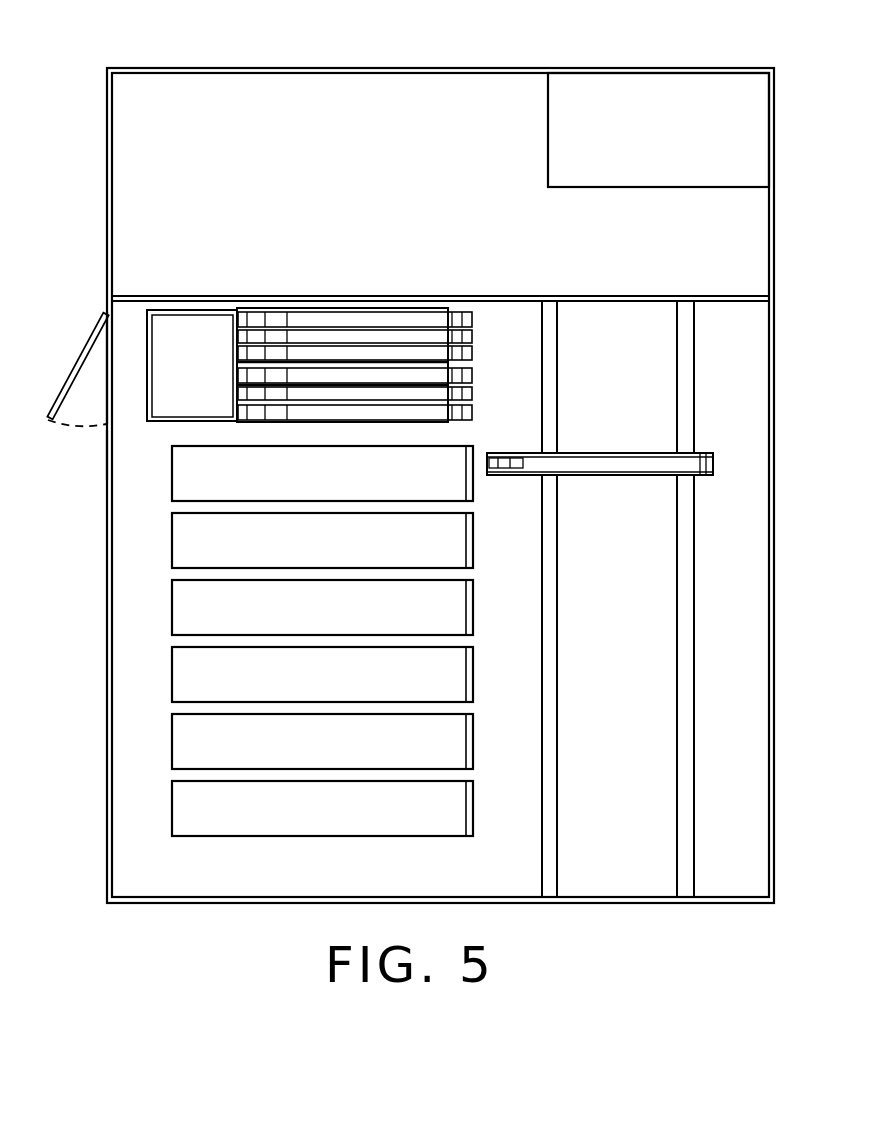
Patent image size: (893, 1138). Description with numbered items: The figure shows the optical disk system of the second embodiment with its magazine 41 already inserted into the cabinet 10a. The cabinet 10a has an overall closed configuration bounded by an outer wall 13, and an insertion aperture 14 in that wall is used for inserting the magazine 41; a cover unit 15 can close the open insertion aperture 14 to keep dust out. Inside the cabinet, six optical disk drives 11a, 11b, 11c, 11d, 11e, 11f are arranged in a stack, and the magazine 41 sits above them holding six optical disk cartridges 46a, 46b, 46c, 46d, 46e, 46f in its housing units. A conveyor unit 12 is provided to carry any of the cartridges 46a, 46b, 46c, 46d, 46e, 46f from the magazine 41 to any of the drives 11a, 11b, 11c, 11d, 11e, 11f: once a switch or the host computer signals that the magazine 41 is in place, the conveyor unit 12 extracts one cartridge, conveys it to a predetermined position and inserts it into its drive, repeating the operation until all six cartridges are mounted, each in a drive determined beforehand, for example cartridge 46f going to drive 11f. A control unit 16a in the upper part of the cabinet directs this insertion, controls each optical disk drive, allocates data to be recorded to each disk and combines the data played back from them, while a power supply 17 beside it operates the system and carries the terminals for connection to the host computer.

The cabinet 10a is at (363, 67).
The control unit 16a is at (275, 92).
The power supply 17 is at (757, 133).
The insertion aperture 14 is at (107, 368).
The cover unit 15 is at (68, 383).
The outer wall 13 is at (107, 452).
The magazine 41 is at (293, 310).
The optical disk cartridge 46a is at (478, 312).
The optical disk cartridge 46b is at (472, 340).
The optical disk cartridge 46c is at (472, 360).
The optical disk cartridge 46d is at (472, 372).
The optical disk cartridge 46e is at (472, 390).
The optical disk cartridge 46f is at (472, 410).
The conveyor unit 12 is at (713, 463).
The optical disk drive 11a is at (172, 476).
The optical disk drive 11b is at (172, 538).
The optical disk drive 11c is at (172, 605).
The optical disk drive 11d is at (172, 675).
The optical disk drive 11e is at (172, 746).
The optical disk drive 11f is at (172, 812).